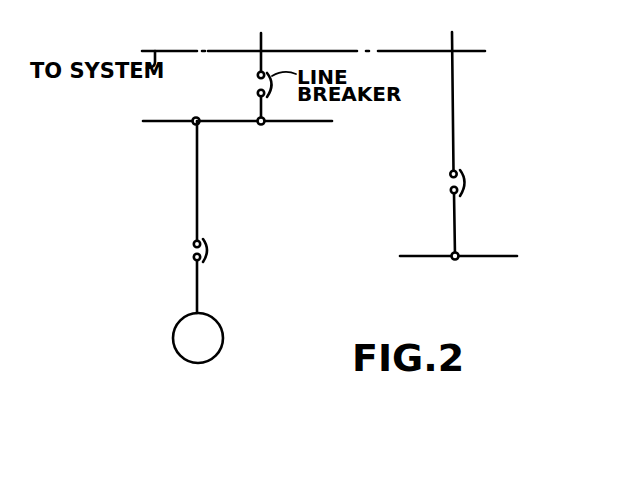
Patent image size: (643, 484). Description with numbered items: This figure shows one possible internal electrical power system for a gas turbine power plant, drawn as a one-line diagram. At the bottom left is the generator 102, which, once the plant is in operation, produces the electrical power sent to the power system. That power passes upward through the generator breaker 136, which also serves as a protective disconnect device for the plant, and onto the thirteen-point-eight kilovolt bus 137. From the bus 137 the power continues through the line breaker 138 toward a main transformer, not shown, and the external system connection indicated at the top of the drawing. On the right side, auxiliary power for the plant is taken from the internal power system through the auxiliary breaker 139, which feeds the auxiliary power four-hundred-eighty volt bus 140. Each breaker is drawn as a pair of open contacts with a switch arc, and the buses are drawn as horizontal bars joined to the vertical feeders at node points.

The generator 102 is at (174, 333).
The generator breaker 136 is at (200, 236).
The 13.8 KV bus 137 is at (300, 122).
The line breaker 138 is at (257, 89).
The auxiliary breaker 139 is at (458, 168).
The auxiliary power 480 volt bus 140 is at (496, 257).